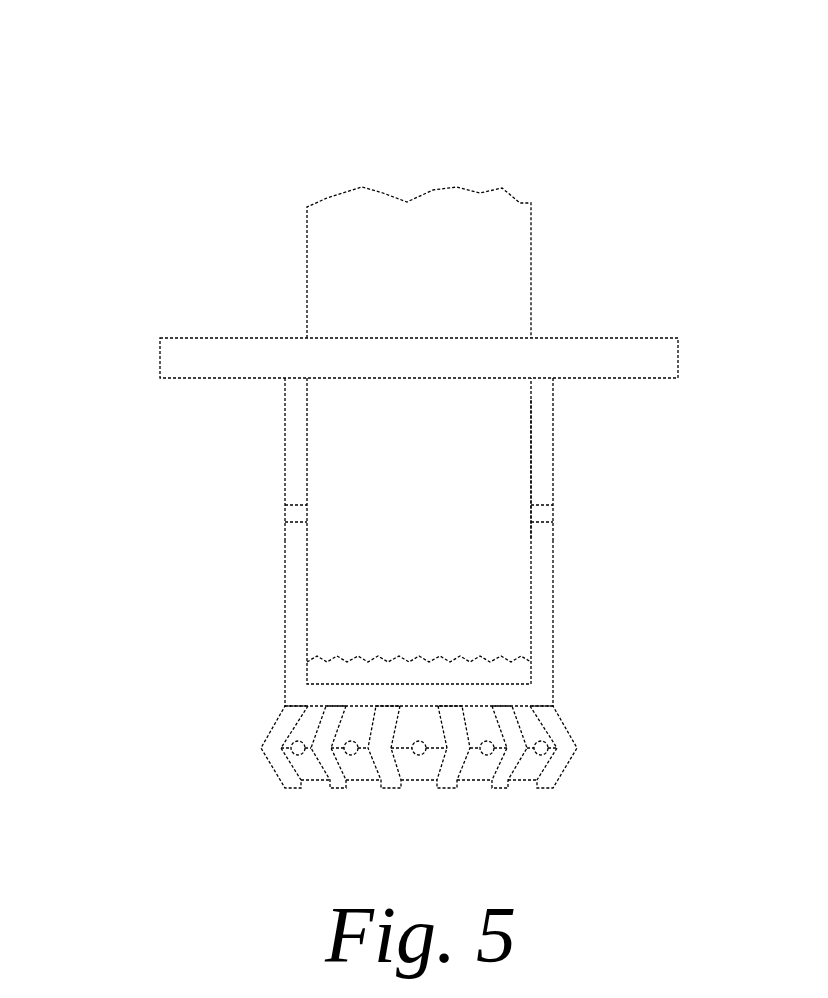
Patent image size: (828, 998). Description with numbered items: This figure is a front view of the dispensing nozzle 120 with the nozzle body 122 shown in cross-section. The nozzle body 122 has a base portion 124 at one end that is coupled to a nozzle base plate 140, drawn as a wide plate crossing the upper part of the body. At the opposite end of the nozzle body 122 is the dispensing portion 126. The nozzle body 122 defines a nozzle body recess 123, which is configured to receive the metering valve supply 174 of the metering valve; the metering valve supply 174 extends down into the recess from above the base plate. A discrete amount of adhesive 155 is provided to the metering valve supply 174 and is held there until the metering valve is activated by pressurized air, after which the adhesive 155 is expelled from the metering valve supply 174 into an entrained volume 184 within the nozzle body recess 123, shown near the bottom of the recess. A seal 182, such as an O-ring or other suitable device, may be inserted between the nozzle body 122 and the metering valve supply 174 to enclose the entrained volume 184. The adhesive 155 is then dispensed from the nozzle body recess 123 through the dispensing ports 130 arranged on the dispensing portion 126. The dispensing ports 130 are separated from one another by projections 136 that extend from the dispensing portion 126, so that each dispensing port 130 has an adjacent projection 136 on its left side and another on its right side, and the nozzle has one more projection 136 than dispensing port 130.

The dispensing nozzle 120 is at (268, 68).
The nozzle base plate 140 is at (177, 358).
The base portion 124 is at (267, 425).
The nozzle body 122 is at (285, 563).
The nozzle body recess 123 is at (563, 465).
The metering valve supply 174 is at (471, 423).
The seal 182 is at (545, 512).
The adhesive 155 is at (515, 671).
The entrained volume 184 is at (552, 687).
The dispensing portion 126 is at (365, 768).
The dispensing ports 130 is at (300, 758).
The projections 136 is at (450, 772).